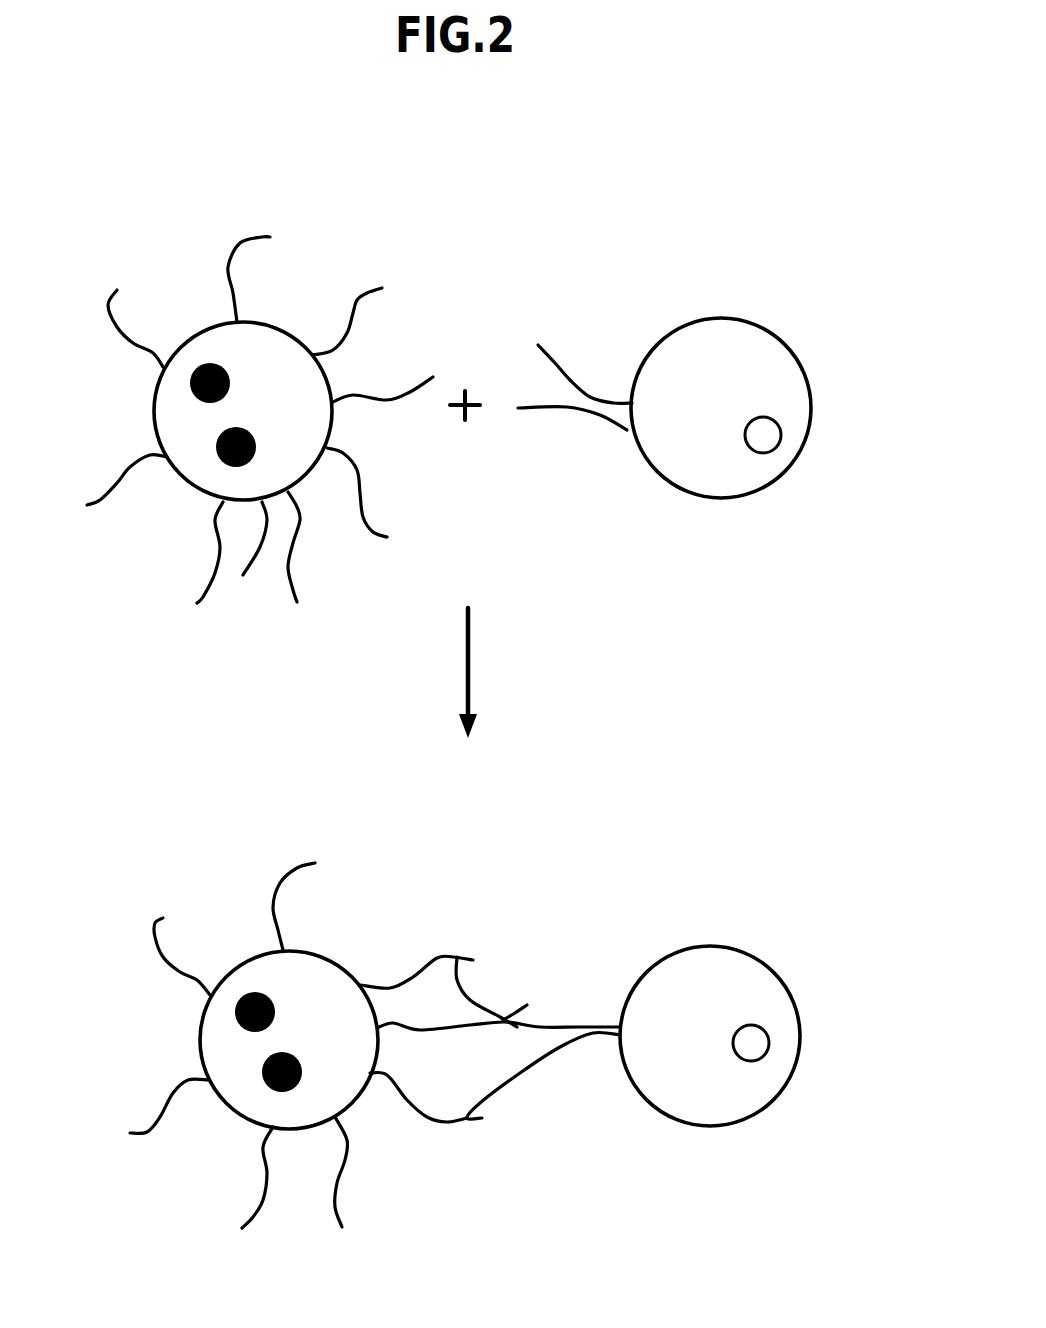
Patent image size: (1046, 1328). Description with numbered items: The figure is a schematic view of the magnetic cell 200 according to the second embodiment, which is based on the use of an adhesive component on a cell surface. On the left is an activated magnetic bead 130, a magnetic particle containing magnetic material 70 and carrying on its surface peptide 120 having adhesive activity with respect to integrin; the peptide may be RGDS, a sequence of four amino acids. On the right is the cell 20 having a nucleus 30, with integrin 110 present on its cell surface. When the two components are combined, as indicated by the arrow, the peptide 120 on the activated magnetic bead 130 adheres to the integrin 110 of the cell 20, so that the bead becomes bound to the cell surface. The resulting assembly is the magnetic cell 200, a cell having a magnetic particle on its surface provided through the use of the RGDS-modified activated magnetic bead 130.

The cell 20 is at (720, 498).
The nucleus 30 is at (772, 440).
The magnetic material 70 is at (208, 405).
The integrin 110 is at (560, 387).
The peptide 120 is at (358, 297).
The activated magnetic bead 130 is at (243, 575).
The magnetic cell 200 is at (560, 842).